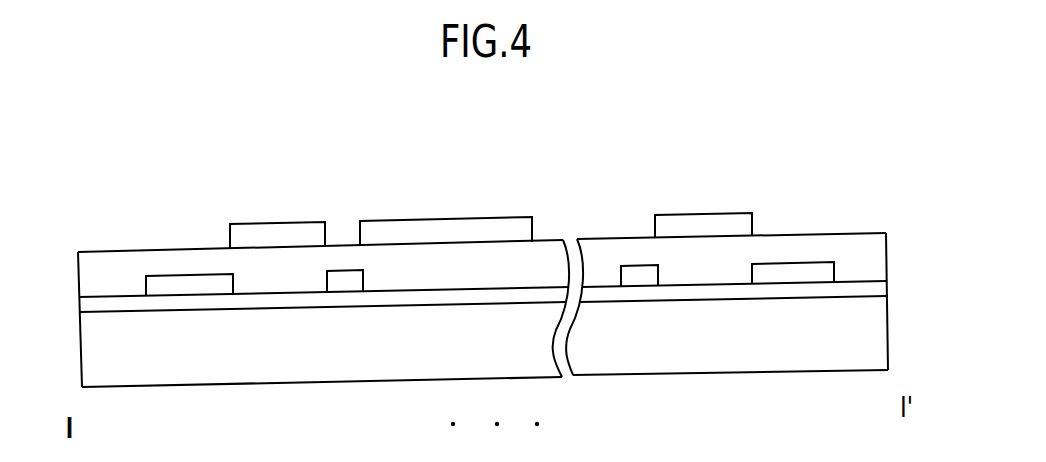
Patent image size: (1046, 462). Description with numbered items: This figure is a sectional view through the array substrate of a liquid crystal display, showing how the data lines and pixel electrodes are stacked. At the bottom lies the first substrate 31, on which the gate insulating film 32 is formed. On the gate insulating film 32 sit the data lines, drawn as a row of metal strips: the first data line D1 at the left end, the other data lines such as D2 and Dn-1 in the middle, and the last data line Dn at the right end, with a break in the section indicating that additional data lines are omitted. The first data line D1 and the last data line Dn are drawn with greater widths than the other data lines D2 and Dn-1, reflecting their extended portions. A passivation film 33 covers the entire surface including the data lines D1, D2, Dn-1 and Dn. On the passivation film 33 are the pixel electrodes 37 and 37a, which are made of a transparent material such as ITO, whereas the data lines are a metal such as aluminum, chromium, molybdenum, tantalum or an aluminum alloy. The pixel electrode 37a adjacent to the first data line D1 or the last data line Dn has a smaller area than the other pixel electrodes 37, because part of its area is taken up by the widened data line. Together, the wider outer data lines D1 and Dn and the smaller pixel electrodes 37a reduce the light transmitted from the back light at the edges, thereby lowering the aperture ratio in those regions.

The first substrate 31 is at (883, 333).
The gate insulating film 32 is at (883, 287).
The passivation film 33 is at (883, 249).
The pixel electrode 37 is at (444, 228).
The pixel electrode 37a is at (274, 230).
The first data line D1 is at (186, 288).
The data line D2 is at (347, 282).
The data line Dn-1 is at (637, 277).
The last data line Dn is at (785, 275).